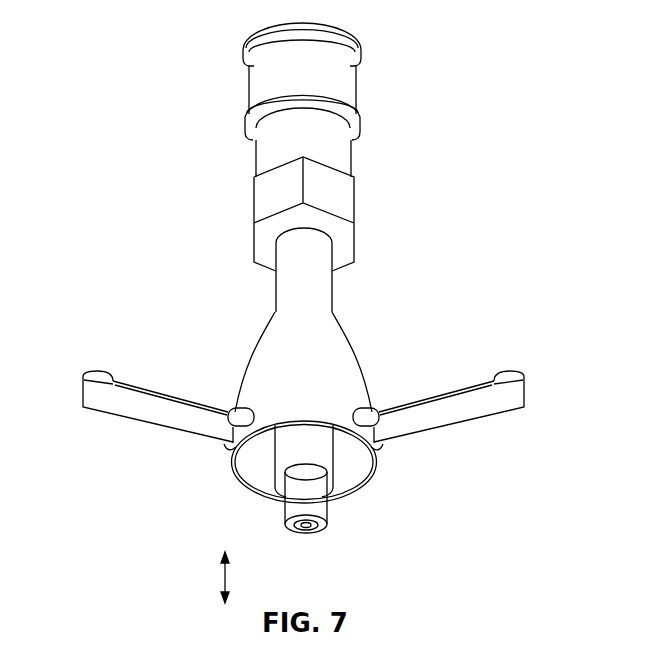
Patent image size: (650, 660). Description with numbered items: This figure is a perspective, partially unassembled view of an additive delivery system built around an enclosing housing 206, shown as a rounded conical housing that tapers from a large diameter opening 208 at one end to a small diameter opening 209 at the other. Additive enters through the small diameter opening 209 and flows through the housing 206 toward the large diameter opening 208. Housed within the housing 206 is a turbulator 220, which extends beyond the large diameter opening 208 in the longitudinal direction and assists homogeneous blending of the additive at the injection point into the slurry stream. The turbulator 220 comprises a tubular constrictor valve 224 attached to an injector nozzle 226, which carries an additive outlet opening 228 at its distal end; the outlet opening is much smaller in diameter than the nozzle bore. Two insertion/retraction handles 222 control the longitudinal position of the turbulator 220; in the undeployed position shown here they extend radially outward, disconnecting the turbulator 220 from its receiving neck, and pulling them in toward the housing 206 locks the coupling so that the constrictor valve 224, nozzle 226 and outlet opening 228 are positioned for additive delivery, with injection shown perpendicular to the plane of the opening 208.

The enclosing housing 206 is at (251, 376).
The large diameter opening 208 is at (338, 428).
The small diameter opening 209 is at (320, 253).
The turbulator 220 is at (303, 463).
The insertion/retraction handles 222 is at (96, 374).
The tubular constrictor valve 224 is at (286, 454).
The injector nozzle 226 is at (292, 496).
The additive outlet opening 228 is at (305, 527).